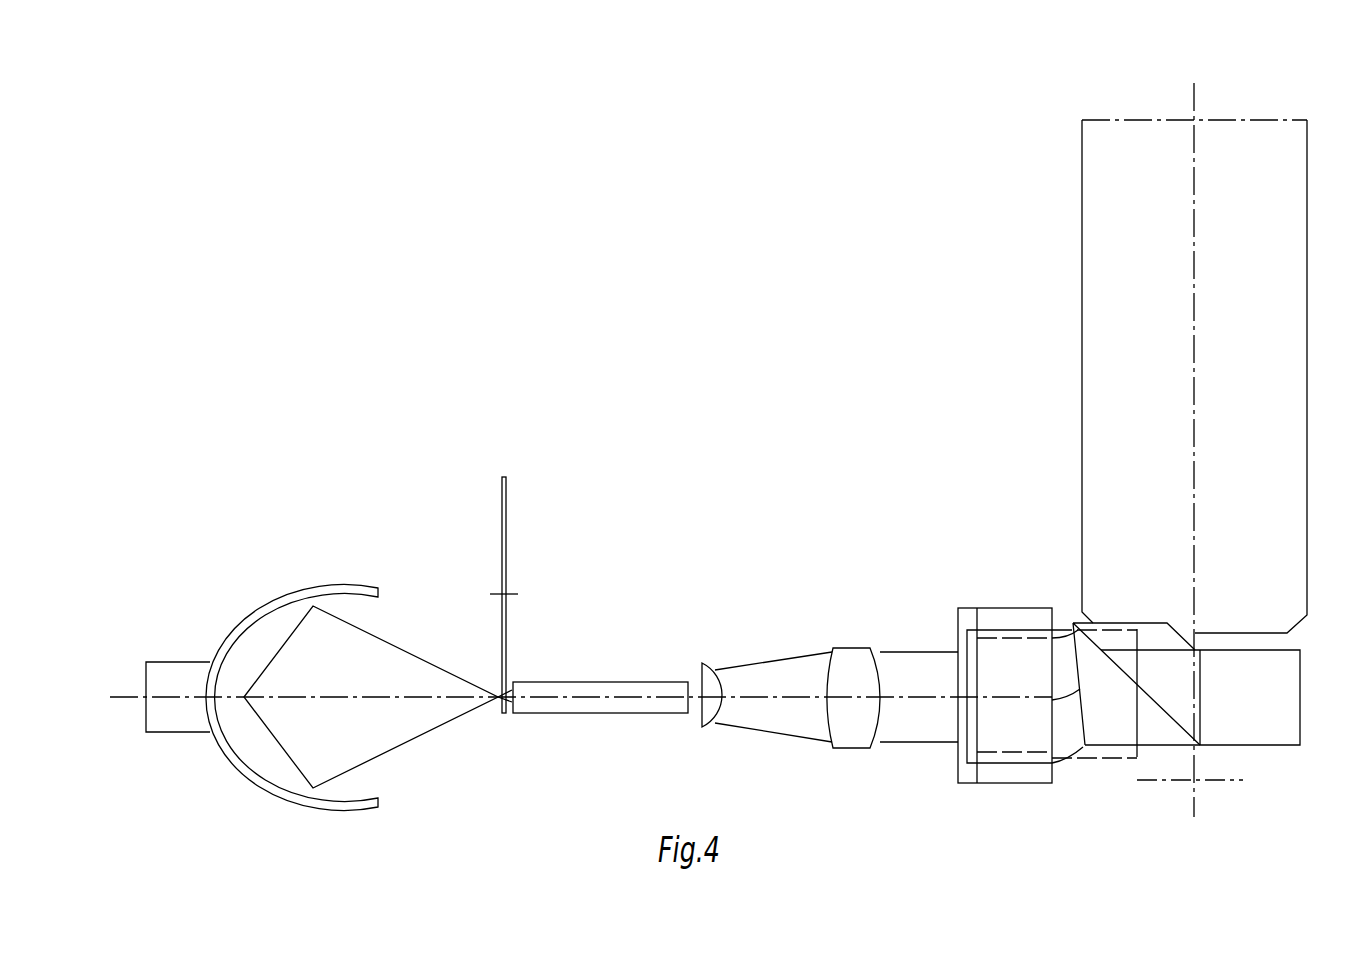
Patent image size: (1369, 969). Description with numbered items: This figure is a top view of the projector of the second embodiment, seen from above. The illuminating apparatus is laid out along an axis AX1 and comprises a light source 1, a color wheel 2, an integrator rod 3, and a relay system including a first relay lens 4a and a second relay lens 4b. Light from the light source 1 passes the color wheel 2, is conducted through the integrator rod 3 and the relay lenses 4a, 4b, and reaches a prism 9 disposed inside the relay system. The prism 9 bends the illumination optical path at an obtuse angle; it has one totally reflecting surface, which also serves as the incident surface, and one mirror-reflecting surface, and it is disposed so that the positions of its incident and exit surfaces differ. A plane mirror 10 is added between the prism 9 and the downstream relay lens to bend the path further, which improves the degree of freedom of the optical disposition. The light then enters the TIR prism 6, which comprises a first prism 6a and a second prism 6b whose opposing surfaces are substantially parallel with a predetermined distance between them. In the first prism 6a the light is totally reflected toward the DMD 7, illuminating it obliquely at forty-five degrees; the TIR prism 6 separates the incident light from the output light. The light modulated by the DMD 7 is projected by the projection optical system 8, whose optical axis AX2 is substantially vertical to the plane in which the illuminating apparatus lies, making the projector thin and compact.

The light source 1 is at (278, 605).
The color wheel 2 is at (500, 507).
The integrator rod 3 is at (551, 682).
The first relay lens 4a is at (705, 663).
The second relay lens 4b is at (850, 648).
The TIR prism 6 is at (1203, 747).
The first prism 6a is at (1153, 740).
The second prism 6b is at (1283, 740).
The DMD 7 is at (1203, 782).
The projection optical system 8 is at (1082, 263).
The prism 9 is at (1003, 608).
The plane mirror 10 is at (1062, 765).
The first optical axis AX1 is at (635, 697).
The optical axis of the projection optical system AX2 is at (1194, 337).